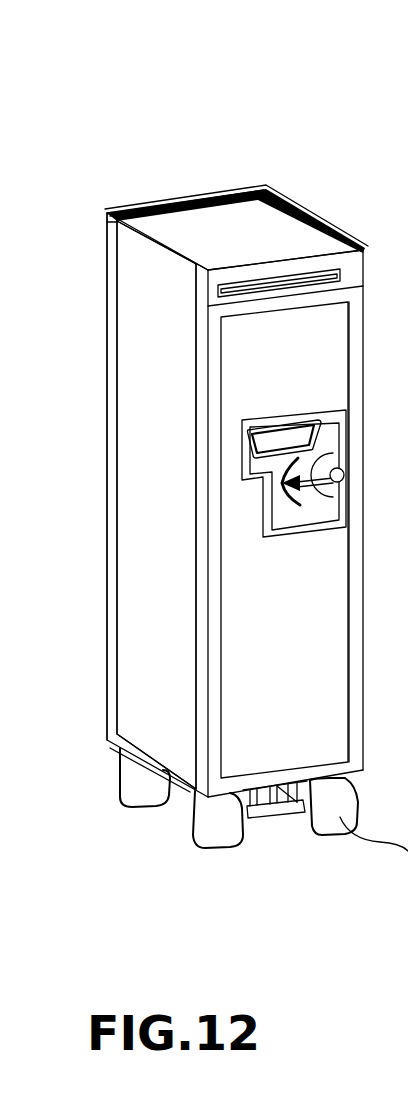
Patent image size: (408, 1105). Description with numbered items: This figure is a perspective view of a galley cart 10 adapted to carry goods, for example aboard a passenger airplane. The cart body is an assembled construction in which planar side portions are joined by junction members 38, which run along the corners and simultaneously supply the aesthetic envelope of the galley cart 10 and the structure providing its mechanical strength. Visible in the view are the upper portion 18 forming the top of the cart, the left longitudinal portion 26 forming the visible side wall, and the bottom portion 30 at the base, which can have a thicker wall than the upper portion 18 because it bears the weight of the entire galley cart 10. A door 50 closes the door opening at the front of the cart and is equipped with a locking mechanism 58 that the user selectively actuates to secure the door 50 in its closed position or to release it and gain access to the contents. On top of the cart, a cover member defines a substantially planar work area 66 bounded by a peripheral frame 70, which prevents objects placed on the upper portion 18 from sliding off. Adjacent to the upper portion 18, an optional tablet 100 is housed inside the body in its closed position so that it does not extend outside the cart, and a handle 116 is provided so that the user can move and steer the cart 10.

The galley cart 10 is at (112, 831).
The upper portion 18 is at (249, 251).
The left longitudinal portion 26 is at (168, 641).
The bottom portion 30 is at (308, 871).
The junction members 38 is at (106, 243).
The door 50 is at (302, 641).
The locking mechanism 58 is at (341, 462).
The work area 66 is at (202, 155).
The peripheral frame 70 is at (150, 249).
The tablet 100 is at (352, 237).
The handle 116 is at (329, 269).